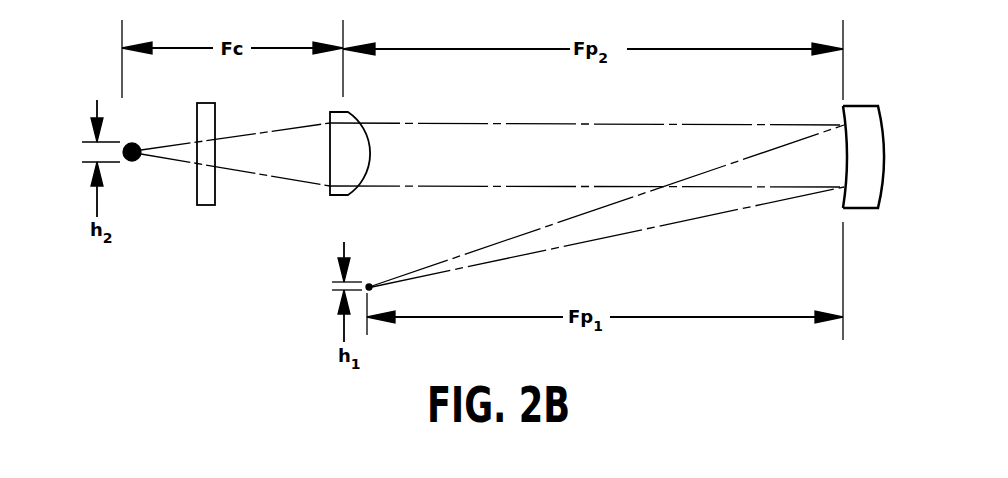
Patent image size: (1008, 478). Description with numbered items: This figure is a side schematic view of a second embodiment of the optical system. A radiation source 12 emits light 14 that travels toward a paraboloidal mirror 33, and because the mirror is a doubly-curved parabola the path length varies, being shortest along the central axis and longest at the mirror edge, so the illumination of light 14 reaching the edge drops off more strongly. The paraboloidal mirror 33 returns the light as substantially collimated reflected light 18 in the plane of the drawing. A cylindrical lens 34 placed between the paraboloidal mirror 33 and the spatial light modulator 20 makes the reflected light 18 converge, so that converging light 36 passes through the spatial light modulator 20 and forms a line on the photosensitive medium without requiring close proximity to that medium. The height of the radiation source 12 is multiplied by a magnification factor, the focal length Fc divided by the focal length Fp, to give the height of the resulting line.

The radiation source 12 is at (371, 284).
The light 14 is at (605, 244).
The reflected light 18 is at (538, 116).
The spatial light modulator 20 is at (201, 120).
The paraboloidal mirror 33 is at (875, 132).
The cylindrical lens 34 is at (347, 118).
The converging light 36 is at (290, 122).